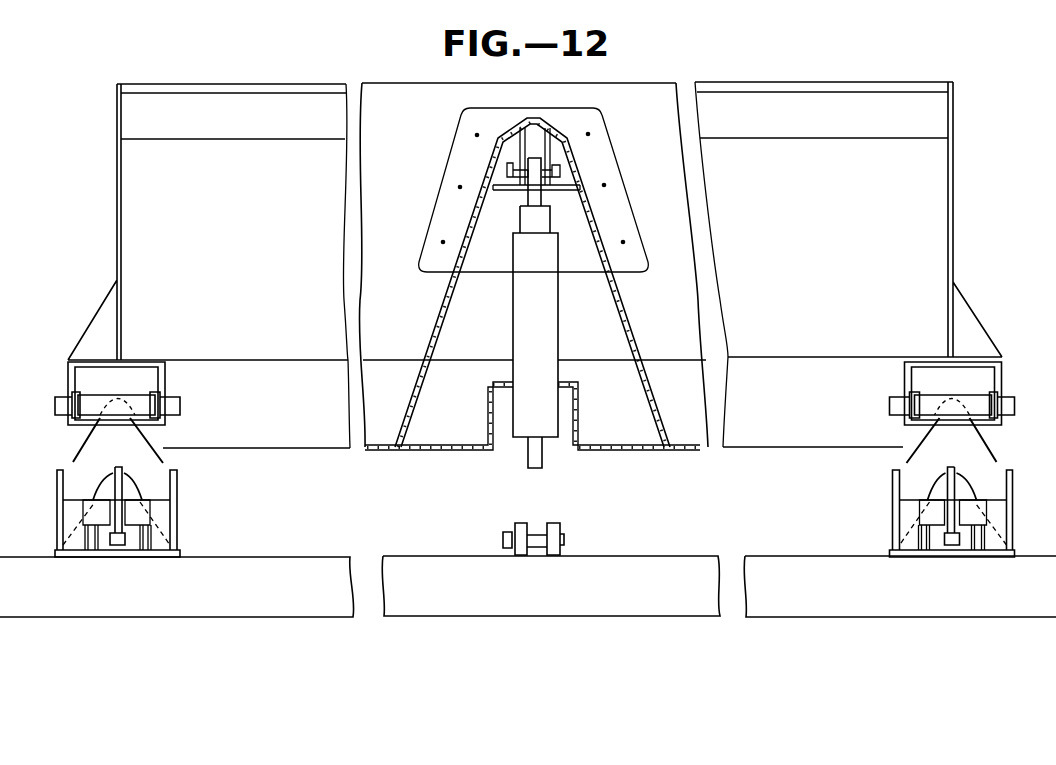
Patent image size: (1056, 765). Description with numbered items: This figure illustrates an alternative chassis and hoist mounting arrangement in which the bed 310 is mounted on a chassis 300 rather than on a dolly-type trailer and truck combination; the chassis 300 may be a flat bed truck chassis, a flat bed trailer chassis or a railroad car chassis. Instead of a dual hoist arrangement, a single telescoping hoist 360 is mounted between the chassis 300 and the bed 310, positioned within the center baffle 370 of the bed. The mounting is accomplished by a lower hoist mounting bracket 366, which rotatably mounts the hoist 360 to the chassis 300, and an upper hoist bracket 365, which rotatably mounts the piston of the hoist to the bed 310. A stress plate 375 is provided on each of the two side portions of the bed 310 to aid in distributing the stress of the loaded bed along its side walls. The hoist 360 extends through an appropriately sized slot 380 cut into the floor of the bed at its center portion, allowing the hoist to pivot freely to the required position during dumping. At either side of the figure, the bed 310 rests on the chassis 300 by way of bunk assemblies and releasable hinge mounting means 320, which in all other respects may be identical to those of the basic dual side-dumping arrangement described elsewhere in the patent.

The chassis 300 is at (440, 565).
The bed 310 is at (277, 150).
The roller anchor assembly 320 is at (142, 472).
The telescoping hoist 360 is at (550, 342).
The upper hoist bracket 365 is at (548, 147).
The lower hoist mounting bracket 366 is at (568, 521).
The center baffle 370 is at (622, 300).
The stress plate 375 is at (632, 222).
The slot 380 is at (582, 414).